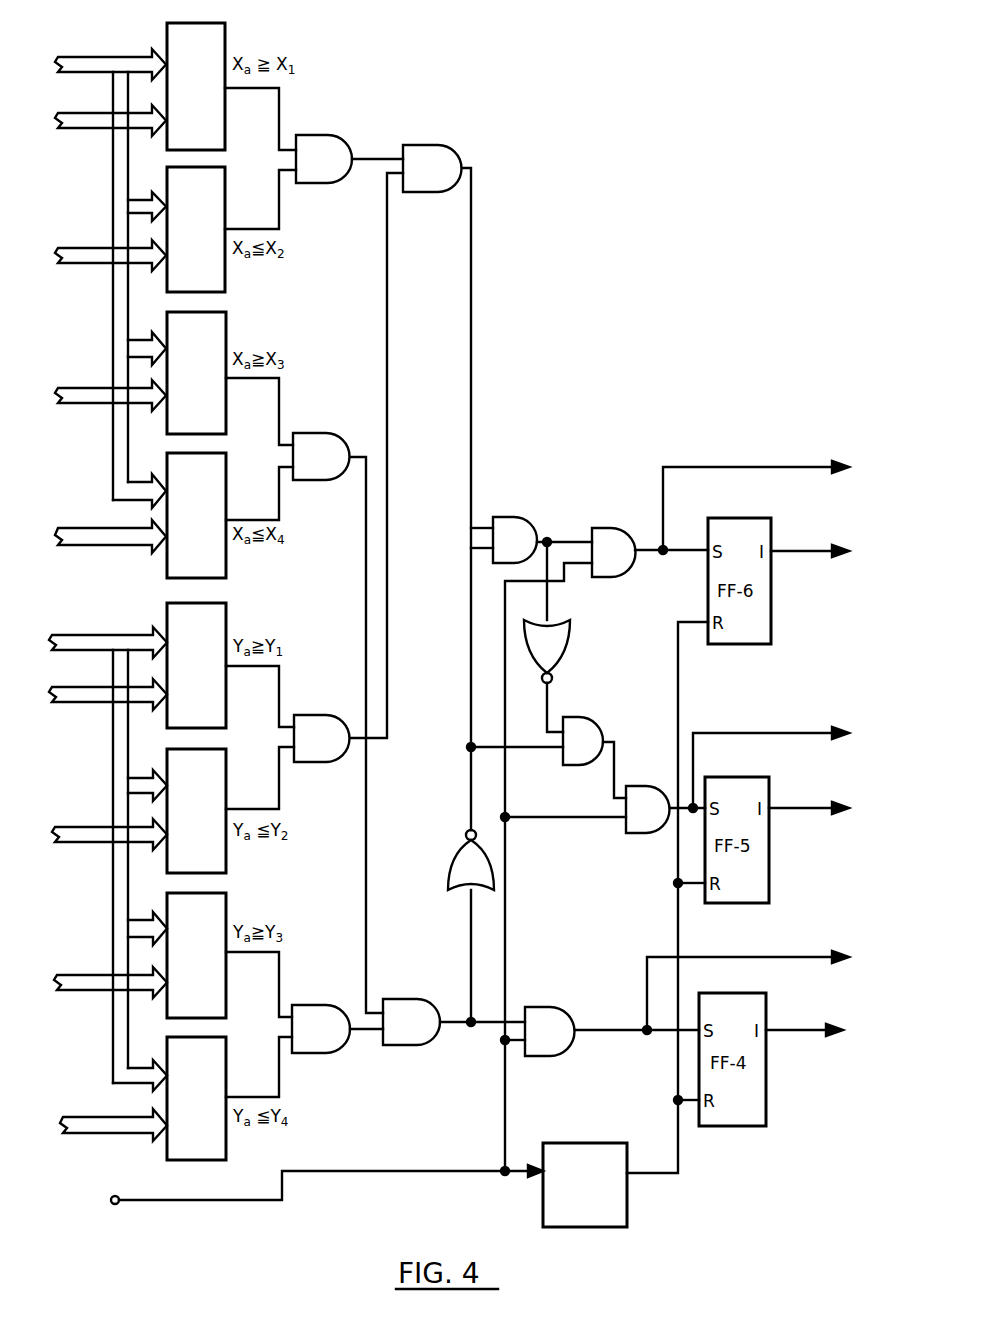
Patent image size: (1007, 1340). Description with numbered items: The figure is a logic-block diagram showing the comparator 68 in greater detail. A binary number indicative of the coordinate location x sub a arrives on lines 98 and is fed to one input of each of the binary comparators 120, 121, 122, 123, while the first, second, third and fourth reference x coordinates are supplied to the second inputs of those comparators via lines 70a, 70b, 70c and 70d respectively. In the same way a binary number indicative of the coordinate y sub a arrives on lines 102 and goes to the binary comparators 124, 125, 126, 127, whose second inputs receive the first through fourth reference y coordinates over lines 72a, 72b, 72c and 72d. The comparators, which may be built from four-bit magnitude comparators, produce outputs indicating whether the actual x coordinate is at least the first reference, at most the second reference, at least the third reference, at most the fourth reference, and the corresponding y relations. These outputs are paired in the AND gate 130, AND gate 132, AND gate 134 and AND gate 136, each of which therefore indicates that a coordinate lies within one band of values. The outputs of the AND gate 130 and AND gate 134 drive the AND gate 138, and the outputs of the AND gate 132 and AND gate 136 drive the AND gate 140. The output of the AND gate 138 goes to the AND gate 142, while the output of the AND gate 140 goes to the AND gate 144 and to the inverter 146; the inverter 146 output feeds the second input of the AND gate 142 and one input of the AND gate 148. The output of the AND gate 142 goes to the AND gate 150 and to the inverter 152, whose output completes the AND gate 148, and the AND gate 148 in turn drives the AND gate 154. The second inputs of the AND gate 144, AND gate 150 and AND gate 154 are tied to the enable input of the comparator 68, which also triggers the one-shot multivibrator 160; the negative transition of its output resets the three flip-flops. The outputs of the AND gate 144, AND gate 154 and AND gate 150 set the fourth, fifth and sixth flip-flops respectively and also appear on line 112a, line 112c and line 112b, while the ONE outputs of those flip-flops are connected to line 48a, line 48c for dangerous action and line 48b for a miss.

The lines 98 is at (88, 62).
The lines 70a is at (89, 128).
The lines 70b is at (90, 263).
The lines 70c is at (90, 403).
The lines 70d is at (93, 546).
The lines 102 is at (92, 638).
The lines 72a is at (91, 697).
The lines 72b is at (88, 830).
The lines 72c is at (87, 975).
The lines 72d is at (93, 1117).
The binary comparator 120 is at (215, 101).
The binary comparator 121 is at (213, 244).
The binary comparator 122 is at (214, 387).
The binary comparator 123 is at (213, 529).
The binary comparator 124 is at (216, 680).
The binary comparator 125 is at (213, 825).
The binary comparator 126 is at (213, 970).
The binary comparator 127 is at (214, 1113).
The AND gate 130 is at (339, 138).
The AND gate 132 is at (320, 437).
The AND gate 134 is at (310, 720).
The AND gate 136 is at (310, 1010).
The AND gate 138 is at (447, 152).
The AND gate 140 is at (413, 1045).
The AND gate 142 is at (518, 517).
The AND gate 144 is at (560, 1040).
The inverter 146 is at (462, 860).
The AND gate 148 is at (590, 717).
The AND gate 150 is at (615, 528).
The inverter 152 is at (560, 645).
The AND gate 154 is at (643, 825).
The one-shot multivibrator 160 is at (628, 1200).
The comparator 68 is at (420, 1204).
The line 112a is at (750, 957).
The line 112b is at (733, 467).
The line 112c is at (800, 733).
The line 48a is at (792, 1030).
The line 48b is at (797, 551).
The line 48c is at (797, 808).